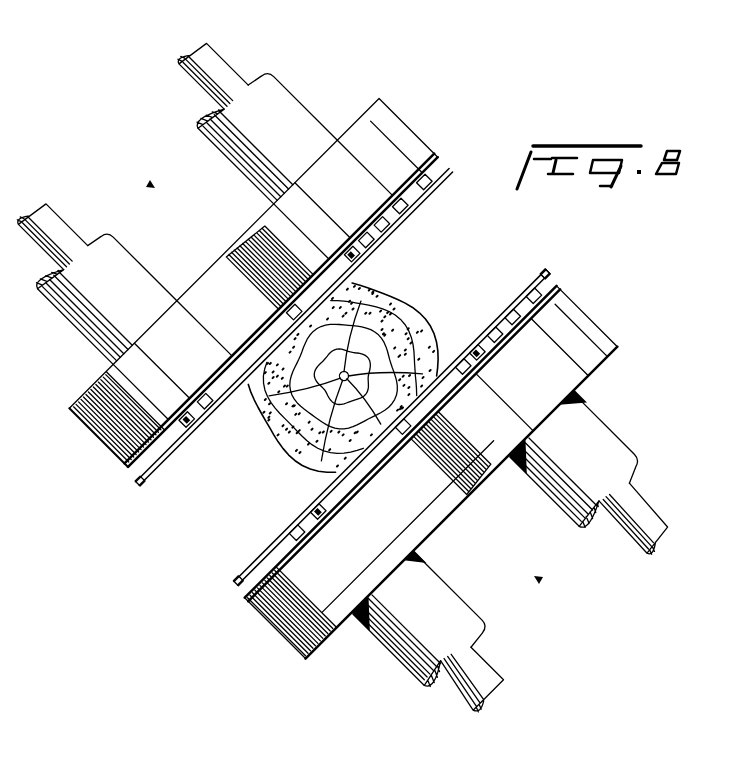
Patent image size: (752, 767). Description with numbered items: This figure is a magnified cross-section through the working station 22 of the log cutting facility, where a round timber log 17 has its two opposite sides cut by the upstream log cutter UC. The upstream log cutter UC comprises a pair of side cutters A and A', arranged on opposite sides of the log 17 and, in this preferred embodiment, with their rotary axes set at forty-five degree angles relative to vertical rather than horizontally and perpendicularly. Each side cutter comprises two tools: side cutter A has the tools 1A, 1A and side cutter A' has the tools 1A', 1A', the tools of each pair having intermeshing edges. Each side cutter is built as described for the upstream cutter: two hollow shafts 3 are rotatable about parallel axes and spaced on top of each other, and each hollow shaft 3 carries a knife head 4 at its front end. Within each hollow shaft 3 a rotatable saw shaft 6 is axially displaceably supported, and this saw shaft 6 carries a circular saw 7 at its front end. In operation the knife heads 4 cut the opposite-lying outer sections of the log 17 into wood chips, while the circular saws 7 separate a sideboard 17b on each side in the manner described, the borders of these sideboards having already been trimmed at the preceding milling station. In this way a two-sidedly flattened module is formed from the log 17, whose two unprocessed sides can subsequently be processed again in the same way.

The tool 1A is at (184, 204).
The tool 1A' is at (425, 487).
The hollow shaft 3 is at (599, 474).
The knife head 4 is at (130, 417).
The saw shaft 6 is at (637, 507).
The circular saw 7 is at (173, 461).
The round timber log 17 is at (401, 317).
The sideboard 17b is at (416, 421).
The working station 22 is at (477, 250).
The upstream log cutter UC is at (478, 170).
The side cutter A is at (125, 146).
The side cutter A' is at (585, 607).